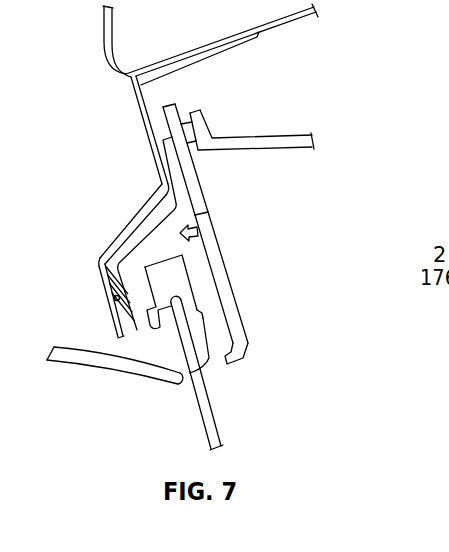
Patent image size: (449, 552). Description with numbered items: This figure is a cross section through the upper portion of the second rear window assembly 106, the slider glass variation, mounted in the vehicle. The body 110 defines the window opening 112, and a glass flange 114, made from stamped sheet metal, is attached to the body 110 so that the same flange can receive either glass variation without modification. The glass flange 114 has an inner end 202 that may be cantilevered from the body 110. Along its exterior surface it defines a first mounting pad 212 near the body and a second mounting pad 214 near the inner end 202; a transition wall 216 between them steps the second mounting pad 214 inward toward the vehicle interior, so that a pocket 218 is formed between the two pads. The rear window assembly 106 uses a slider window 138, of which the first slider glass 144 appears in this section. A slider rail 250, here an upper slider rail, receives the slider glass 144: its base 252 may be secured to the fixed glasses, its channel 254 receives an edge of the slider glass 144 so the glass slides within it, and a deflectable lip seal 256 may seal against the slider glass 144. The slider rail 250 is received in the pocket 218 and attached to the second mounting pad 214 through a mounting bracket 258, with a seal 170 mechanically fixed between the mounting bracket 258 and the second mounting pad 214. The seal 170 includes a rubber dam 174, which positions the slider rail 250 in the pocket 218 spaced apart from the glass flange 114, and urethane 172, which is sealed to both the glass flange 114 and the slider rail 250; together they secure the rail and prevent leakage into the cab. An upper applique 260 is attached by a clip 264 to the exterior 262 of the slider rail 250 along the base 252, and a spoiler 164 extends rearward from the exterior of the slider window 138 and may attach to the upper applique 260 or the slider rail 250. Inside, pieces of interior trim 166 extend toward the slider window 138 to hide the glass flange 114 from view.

The second rear window assembly 106 is at (332, 68).
The body 110 is at (116, 42).
The window opening 112 is at (293, 72).
The glass flange 114 is at (133, 113).
The slider window 138 is at (290, 242).
The first slider glass 144 is at (210, 413).
The spoiler 164 is at (255, 143).
The interior trim 166 is at (102, 373).
The seal 170 is at (107, 285).
The urethane 172 is at (100, 272).
The rubber dam 174 is at (118, 325).
The inner end 202 is at (123, 334).
The first mounting pad 212 is at (146, 130).
The second mounting pad 214 is at (114, 300).
The transition wall 216 is at (122, 236).
The pocket 218 is at (140, 218).
The slider rail 250 is at (195, 262).
The base 252 is at (218, 327).
The channel 254 is at (171, 283).
The lip seal 256 is at (208, 362).
The mounting bracket 258 is at (193, 308).
The upper applique 260 is at (198, 198).
The exterior 262 is at (207, 210).
The clip 264 is at (205, 241).